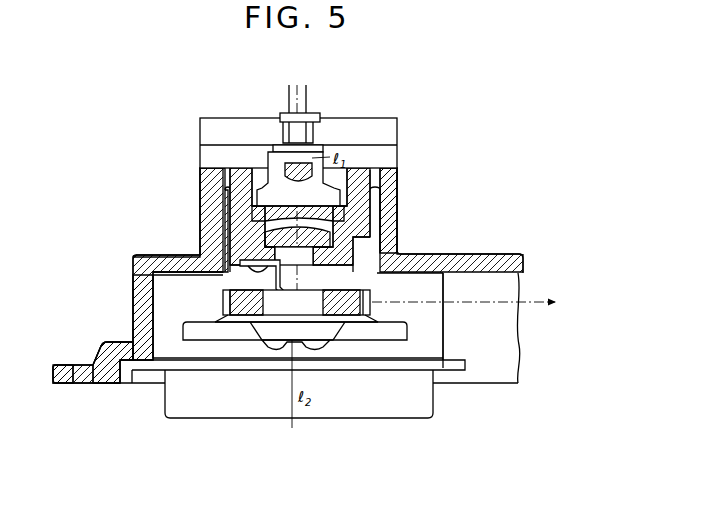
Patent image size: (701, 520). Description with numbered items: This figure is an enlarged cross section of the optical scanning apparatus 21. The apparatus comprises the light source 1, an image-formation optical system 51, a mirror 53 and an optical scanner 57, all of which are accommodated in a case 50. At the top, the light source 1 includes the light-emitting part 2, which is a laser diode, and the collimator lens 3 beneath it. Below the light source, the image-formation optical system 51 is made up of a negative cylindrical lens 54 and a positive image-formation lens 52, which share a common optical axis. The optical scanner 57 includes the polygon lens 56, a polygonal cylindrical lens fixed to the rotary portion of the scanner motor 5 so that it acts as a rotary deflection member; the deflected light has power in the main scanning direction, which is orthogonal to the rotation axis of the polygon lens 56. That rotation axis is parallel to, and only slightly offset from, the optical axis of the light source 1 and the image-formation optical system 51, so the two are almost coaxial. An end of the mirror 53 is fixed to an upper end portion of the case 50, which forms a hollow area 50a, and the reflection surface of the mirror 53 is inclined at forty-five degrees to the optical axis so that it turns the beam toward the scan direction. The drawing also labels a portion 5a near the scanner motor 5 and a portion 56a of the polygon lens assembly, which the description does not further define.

The light source 1 is at (350, 133).
The light-emitting part 2 is at (282, 127).
The collimator lens 3 is at (287, 165).
The scanner motor 5 is at (374, 420).
The motor base recess 5a is at (203, 337).
The optical scanning apparatus 21 is at (486, 161).
The case 50 is at (140, 288).
The hollow area 50a is at (200, 257).
The image-formation optical system 51 is at (373, 215).
The positive image-formation lens 52 is at (267, 240).
The mirror 53 is at (292, 270).
The negative cylindrical lens 54 is at (260, 212).
The polygon lens 56 is at (372, 306).
The coil yoke 56a is at (267, 330).
The optical scanner 57 is at (385, 350).